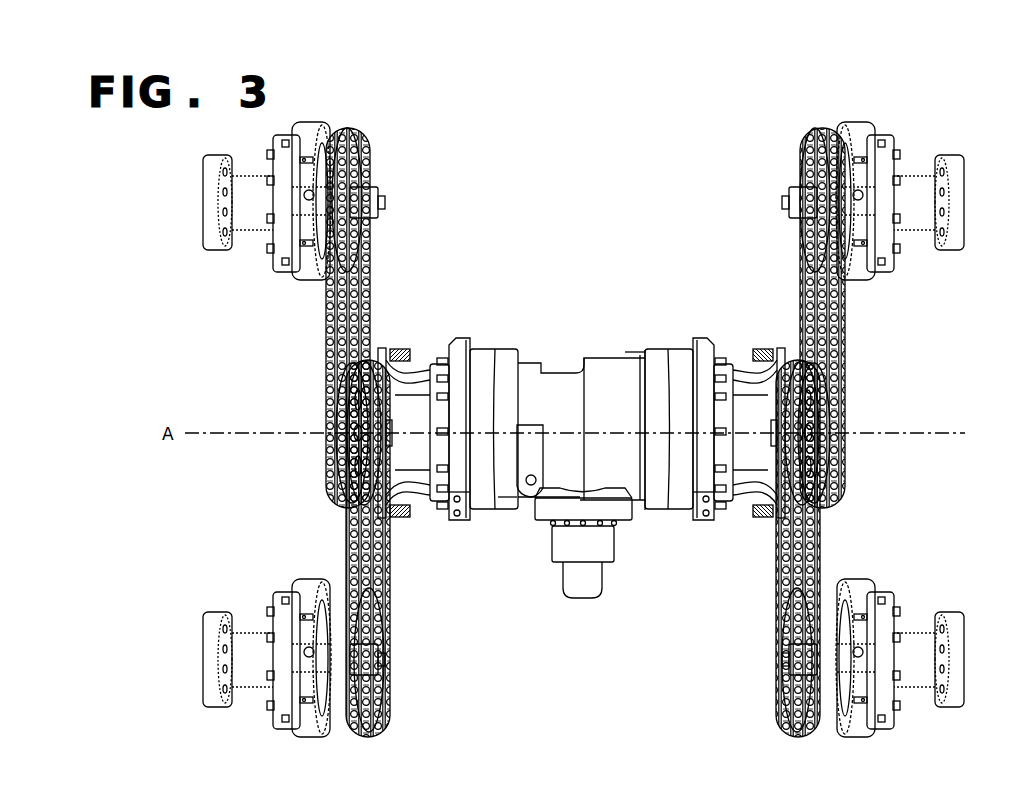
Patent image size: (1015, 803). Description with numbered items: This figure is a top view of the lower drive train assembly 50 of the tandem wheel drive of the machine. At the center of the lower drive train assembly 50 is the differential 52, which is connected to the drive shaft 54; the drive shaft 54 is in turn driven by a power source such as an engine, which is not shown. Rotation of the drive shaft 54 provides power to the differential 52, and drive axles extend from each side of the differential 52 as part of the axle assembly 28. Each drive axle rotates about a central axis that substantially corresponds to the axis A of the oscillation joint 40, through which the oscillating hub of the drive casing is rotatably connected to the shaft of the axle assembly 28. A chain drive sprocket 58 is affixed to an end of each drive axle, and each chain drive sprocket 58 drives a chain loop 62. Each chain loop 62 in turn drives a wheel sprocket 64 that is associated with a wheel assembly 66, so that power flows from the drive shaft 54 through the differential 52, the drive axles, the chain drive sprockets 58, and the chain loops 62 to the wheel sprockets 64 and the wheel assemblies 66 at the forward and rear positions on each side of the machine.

The lower drive train assembly 50 is at (128, 333).
The differential 52 is at (688, 330).
The drive shaft 54 is at (583, 592).
The oscillation joint 40 is at (437, 342).
The axle assembly 28 is at (315, 396).
The chain drive sprocket 58 is at (345, 456).
The chain loop 62 is at (328, 322).
The wheel sprocket 64 is at (362, 140).
The wheel assembly 66 is at (286, 285).